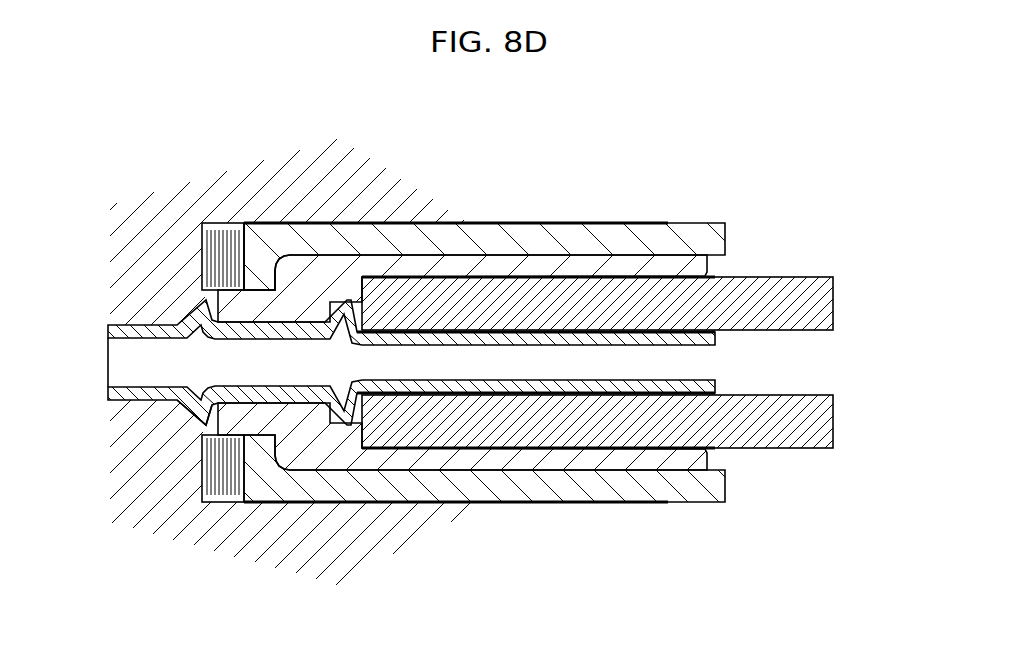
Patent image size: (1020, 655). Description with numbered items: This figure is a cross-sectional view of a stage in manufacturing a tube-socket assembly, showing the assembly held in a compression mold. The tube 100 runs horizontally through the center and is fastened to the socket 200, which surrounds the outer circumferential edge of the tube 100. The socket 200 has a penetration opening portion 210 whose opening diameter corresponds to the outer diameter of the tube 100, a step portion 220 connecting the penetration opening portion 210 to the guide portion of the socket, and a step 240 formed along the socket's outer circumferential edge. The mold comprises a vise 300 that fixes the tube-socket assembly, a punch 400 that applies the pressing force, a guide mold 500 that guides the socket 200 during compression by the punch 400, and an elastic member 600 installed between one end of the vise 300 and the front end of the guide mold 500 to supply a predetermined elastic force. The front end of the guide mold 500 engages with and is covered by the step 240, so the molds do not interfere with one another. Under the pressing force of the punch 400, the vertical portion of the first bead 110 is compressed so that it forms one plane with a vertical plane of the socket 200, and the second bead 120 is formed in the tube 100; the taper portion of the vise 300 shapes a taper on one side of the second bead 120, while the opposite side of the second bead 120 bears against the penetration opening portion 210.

The tube 100 is at (718, 340).
The first bead 110 is at (367, 412).
The second bead 120 is at (197, 417).
The socket 200 is at (628, 460).
The penetration opening portion 210 is at (292, 422).
The step portion 220 is at (338, 298).
The step 240 is at (273, 276).
The vise 300 is at (150, 227).
The punch 400 is at (783, 300).
The guide mold 500 is at (692, 248).
The elastic member 600 is at (212, 477).